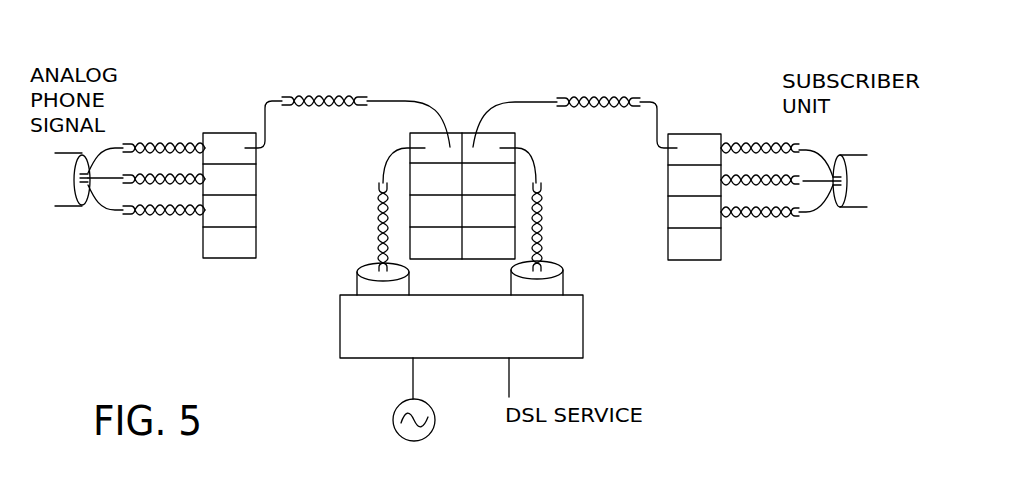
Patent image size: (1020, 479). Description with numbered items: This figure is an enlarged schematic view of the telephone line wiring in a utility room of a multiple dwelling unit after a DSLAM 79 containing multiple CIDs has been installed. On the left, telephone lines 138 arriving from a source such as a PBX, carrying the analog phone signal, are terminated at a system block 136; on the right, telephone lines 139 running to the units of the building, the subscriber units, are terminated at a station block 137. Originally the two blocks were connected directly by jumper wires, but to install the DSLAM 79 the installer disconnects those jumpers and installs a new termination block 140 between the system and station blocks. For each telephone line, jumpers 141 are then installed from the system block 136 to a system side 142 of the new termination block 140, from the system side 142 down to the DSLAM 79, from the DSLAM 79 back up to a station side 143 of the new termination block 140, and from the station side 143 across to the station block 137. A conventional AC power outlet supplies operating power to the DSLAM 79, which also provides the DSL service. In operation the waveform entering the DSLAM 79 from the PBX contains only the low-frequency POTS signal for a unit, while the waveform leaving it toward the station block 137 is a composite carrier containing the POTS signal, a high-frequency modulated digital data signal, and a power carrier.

The DSLAM 79 is at (340, 305).
The system block 136 is at (223, 137).
The station block 137 is at (693, 138).
The telephone lines 138 is at (177, 218).
The telephone lines 139 is at (767, 218).
The new termination block 140 is at (348, 96).
The jumpers 141 is at (471, 86).
The system side 142 is at (421, 249).
The station side 143 is at (467, 250).